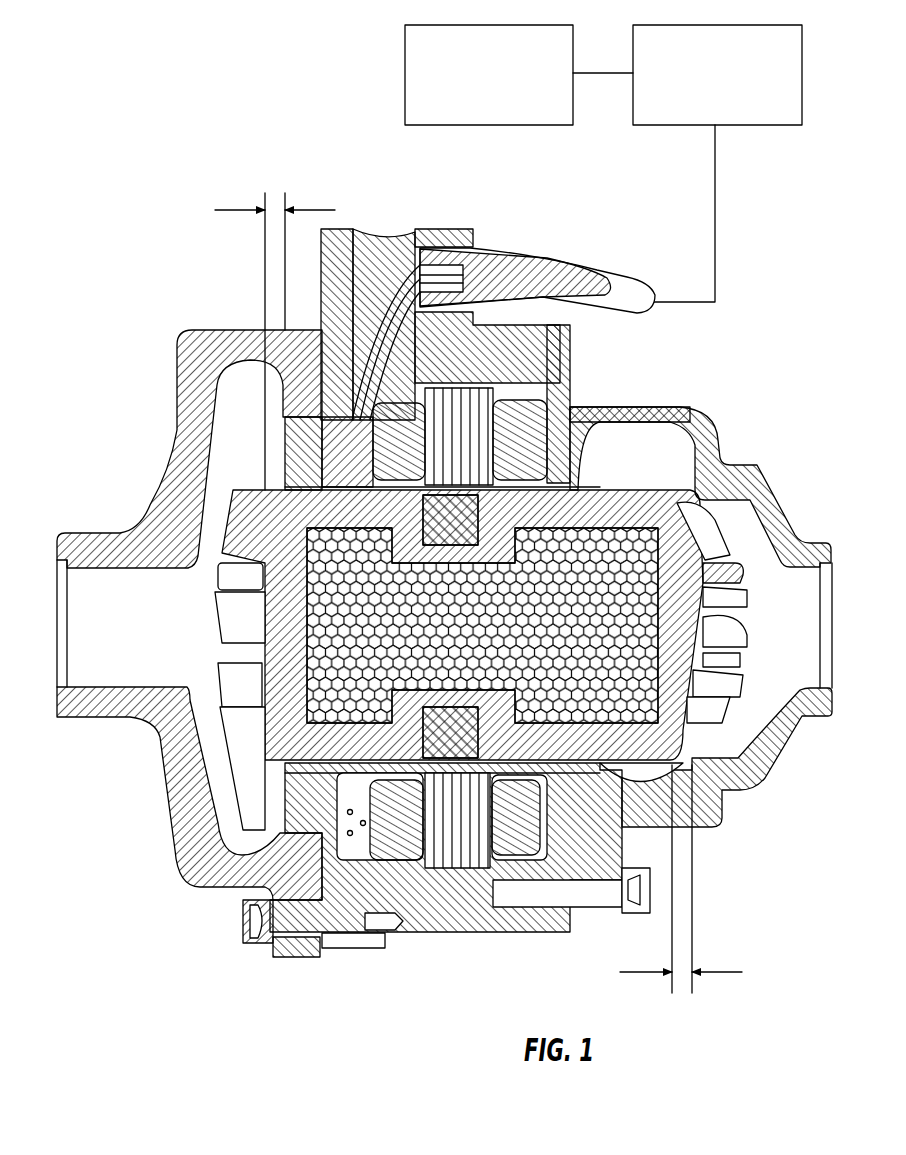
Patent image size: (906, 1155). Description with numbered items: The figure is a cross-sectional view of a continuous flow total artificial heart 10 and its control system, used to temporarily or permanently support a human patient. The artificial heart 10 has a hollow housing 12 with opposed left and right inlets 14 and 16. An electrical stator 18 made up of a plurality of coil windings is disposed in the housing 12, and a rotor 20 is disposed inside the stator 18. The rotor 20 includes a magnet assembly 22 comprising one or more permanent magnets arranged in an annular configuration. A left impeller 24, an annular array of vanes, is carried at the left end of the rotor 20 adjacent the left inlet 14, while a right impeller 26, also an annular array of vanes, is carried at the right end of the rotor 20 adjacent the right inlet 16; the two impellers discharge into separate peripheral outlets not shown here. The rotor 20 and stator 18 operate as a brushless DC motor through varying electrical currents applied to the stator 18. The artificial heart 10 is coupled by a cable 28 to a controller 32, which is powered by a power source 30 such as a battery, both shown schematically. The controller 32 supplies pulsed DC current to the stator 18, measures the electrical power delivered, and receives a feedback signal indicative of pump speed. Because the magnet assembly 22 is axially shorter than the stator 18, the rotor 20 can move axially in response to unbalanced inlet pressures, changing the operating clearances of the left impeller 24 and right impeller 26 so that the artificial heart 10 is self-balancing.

The continuous flow total artificial heart 10 is at (175, 168).
The housing 12 is at (517, 923).
The left inlet 14 is at (50, 578).
The right inlet 16 is at (838, 575).
The electrical stator 18 is at (452, 853).
The rotor 20 is at (612, 485).
The magnet assembly 22 is at (470, 523).
The left impeller 24 is at (247, 757).
The right impeller 26 is at (707, 723).
The cable 28 is at (527, 272).
The power source 30 is at (489, 75).
The controller 32 is at (687, 163).